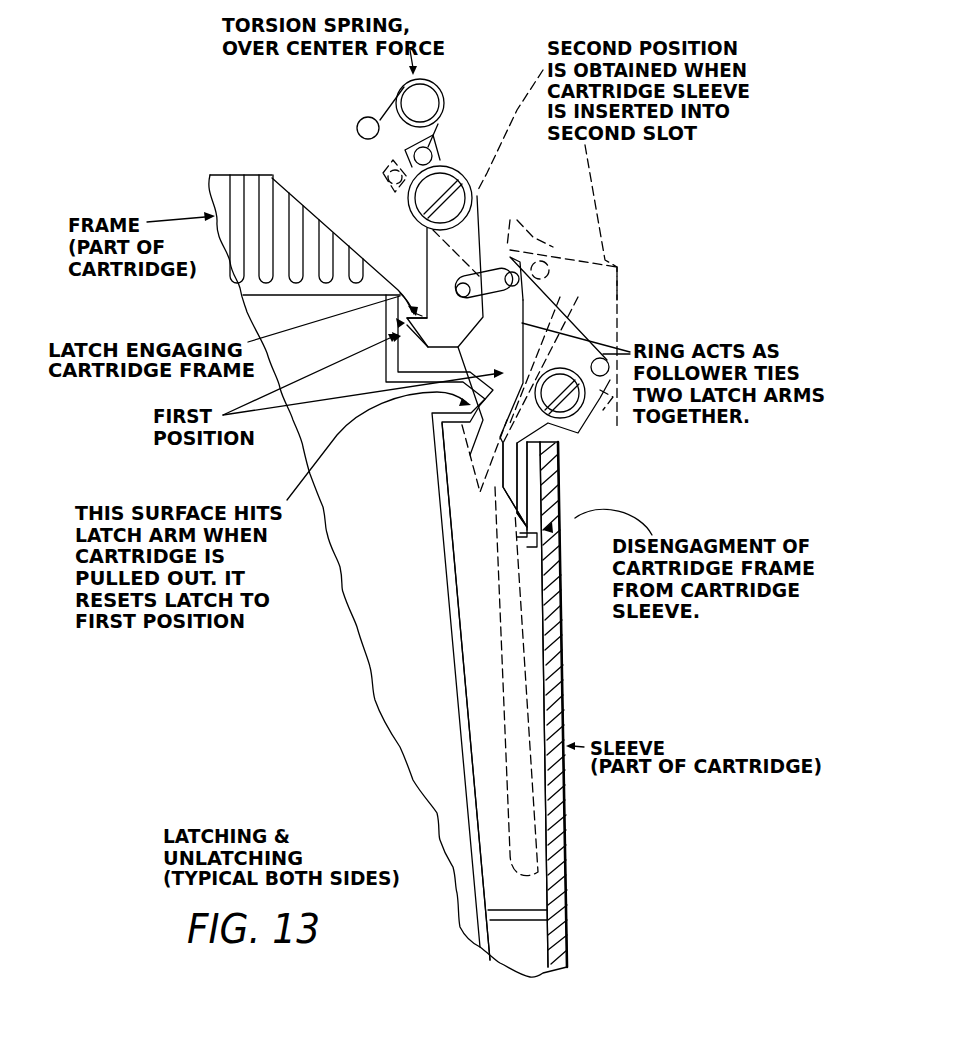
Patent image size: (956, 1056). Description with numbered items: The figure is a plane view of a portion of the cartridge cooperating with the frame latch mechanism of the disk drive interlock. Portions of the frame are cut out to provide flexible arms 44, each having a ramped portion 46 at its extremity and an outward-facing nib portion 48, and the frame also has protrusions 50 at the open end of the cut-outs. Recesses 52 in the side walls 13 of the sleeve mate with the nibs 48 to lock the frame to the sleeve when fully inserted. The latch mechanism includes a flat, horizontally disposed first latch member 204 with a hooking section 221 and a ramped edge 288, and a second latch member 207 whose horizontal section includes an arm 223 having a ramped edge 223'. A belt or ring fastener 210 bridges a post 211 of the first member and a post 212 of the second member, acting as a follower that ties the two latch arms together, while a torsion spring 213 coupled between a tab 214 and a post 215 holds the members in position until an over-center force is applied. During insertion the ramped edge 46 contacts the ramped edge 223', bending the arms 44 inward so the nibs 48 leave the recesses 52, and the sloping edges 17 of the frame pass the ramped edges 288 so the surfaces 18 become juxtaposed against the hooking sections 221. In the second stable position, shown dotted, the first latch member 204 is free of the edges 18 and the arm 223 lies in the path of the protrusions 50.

The side walls 13 is at (553, 673).
The sloping edges 17 is at (323, 223).
The surfaces 18 is at (400, 324).
The arms 44 is at (518, 633).
The ramped portion 46 is at (510, 498).
The nib portion 48 is at (563, 578).
The protrusions 50 is at (470, 428).
The recesses 52 is at (552, 527).
The first latch member 204 is at (497, 200).
The second latch member 207 is at (592, 417).
The belt or ring fastener 210 is at (557, 250).
The post 211 is at (453, 285).
The post 212 is at (622, 300).
The torsion spring 213 is at (447, 96).
The tab 214 is at (440, 145).
The post 215 is at (370, 116).
The hooking section 221 is at (418, 305).
The arm 223 is at (566, 489).
The ramped edge 223' is at (440, 691).
The ramped edges 288 is at (400, 335).